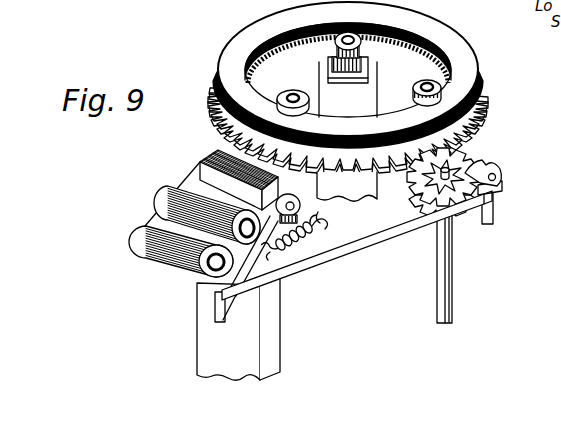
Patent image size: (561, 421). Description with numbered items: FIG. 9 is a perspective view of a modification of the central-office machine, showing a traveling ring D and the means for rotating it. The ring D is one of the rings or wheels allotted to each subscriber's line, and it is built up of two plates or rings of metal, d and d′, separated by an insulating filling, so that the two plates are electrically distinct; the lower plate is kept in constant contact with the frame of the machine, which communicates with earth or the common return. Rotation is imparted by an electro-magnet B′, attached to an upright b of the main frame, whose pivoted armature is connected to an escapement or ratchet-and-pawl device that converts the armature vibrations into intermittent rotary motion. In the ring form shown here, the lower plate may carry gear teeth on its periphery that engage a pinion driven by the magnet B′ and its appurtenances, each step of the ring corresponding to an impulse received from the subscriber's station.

The ring or wheel D is at (446, 28).
The metal plate or ring d is at (248, 33).
The metal plate or ring d′ is at (264, 66).
The electro-magnet B′ is at (120, 278).
The upright b is at (291, 367).